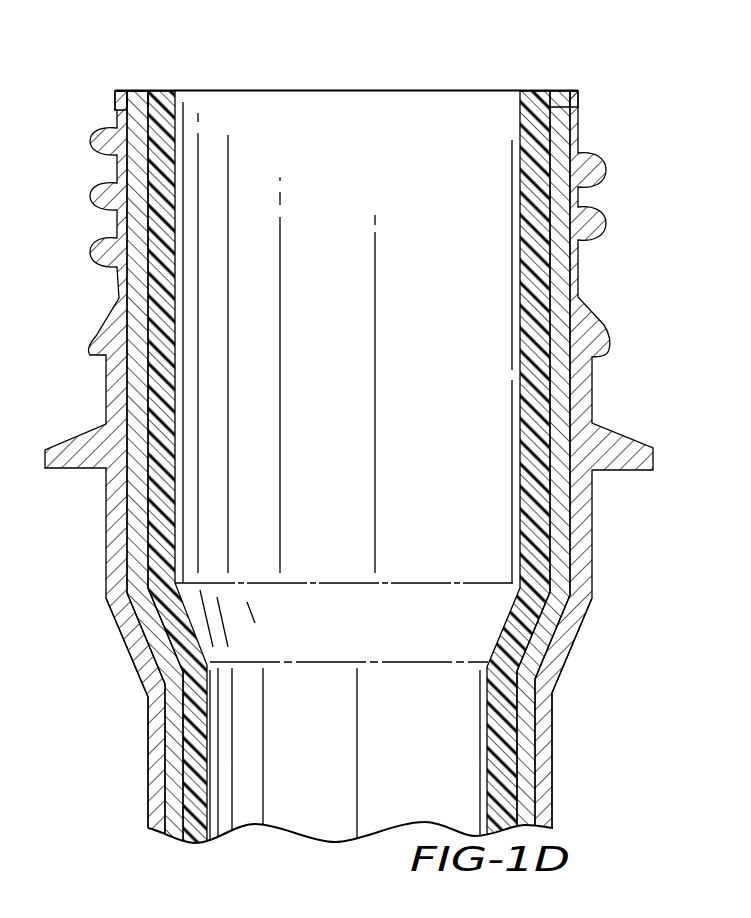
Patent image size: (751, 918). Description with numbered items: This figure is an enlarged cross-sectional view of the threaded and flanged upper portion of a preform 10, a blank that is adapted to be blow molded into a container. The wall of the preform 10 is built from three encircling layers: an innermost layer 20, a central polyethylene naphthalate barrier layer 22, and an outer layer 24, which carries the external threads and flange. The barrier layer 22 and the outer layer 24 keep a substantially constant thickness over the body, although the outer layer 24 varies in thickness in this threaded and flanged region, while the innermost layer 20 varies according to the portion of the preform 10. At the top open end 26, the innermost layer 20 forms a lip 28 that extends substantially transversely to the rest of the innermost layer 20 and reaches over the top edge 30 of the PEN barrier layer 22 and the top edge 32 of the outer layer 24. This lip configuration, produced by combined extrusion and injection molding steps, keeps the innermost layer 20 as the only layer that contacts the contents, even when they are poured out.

The preform 10 is at (635, 238).
The innermost layer 20 is at (153, 568).
The polyethylene naphthalate barrier layer 22 is at (562, 388).
The outer layer 24 is at (590, 610).
The top open end 26 is at (265, 88).
The lip 28 is at (580, 90).
The top edge of PEN barrier layer 30 is at (143, 93).
The top edge of outer layer 32 is at (120, 92).